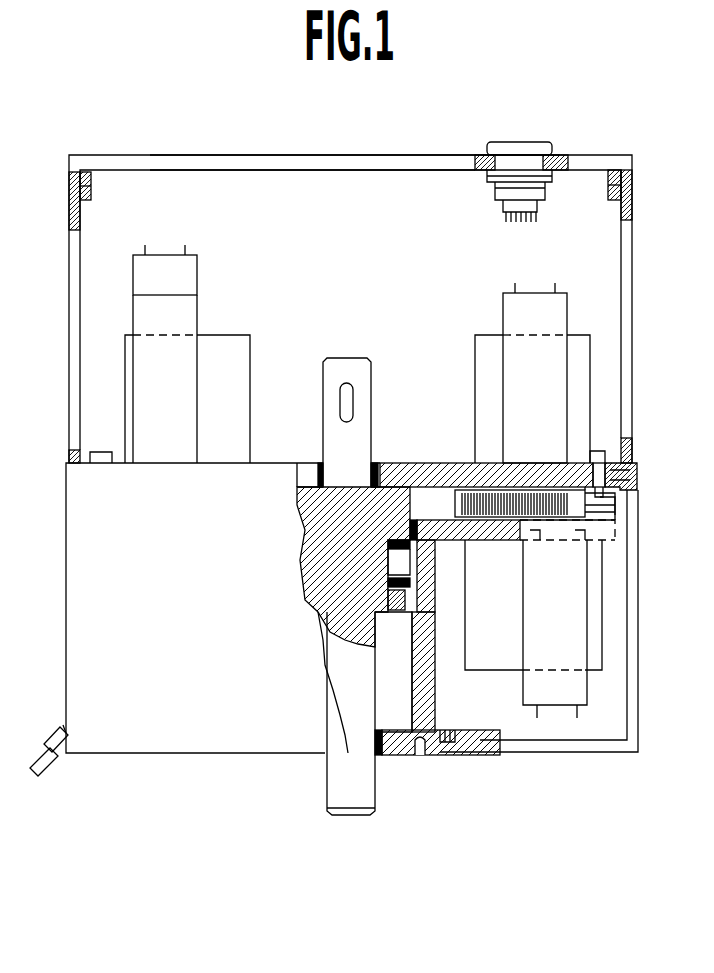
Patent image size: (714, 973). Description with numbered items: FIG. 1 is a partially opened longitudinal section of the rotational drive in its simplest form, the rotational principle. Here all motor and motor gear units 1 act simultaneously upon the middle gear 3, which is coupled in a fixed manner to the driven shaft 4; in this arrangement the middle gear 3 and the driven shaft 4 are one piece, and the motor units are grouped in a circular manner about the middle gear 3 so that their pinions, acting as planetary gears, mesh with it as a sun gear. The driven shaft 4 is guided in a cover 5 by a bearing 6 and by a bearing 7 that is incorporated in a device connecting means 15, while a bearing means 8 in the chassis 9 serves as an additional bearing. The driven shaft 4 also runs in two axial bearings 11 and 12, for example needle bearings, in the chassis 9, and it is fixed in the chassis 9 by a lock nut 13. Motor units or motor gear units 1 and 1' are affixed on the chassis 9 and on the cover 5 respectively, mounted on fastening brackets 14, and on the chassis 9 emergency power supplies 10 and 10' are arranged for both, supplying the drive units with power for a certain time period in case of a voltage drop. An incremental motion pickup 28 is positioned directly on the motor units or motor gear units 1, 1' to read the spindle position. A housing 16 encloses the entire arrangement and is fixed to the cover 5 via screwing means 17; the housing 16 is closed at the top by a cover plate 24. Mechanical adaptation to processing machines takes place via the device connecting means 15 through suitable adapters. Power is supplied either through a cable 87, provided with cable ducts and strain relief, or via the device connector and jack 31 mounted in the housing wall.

The motor gear unit 1 is at (545, 629).
The motor gear unit 1' is at (370, 373).
The middle gear 3 is at (330, 564).
The driven shaft 4 is at (363, 402).
The cover 5 is at (160, 463).
The bearing 6 is at (320, 465).
The bearing 7 is at (393, 756).
The bearing means 8 is at (425, 553).
The chassis 9 is at (490, 544).
The emergency power supply 10 is at (533, 623).
The emergency power supply 10' is at (357, 383).
The axial bearing 11 is at (410, 585).
The axial bearing 12 is at (408, 604).
The lock nut 13 is at (401, 606).
The fastening bracket 14 is at (605, 520).
The device connecting means 15 is at (422, 704).
The housing 16 is at (70, 322).
The screwing means 17 is at (634, 484).
The cover 24 is at (346, 172).
The incremental motion pickup 28 is at (136, 272).
The device connector and jack 31 is at (552, 150).
The cable 87 is at (63, 726).